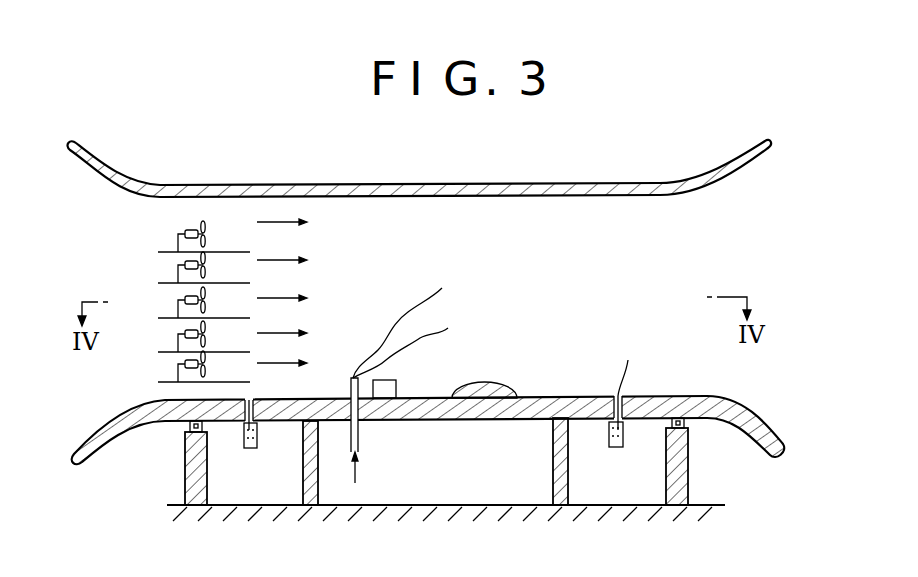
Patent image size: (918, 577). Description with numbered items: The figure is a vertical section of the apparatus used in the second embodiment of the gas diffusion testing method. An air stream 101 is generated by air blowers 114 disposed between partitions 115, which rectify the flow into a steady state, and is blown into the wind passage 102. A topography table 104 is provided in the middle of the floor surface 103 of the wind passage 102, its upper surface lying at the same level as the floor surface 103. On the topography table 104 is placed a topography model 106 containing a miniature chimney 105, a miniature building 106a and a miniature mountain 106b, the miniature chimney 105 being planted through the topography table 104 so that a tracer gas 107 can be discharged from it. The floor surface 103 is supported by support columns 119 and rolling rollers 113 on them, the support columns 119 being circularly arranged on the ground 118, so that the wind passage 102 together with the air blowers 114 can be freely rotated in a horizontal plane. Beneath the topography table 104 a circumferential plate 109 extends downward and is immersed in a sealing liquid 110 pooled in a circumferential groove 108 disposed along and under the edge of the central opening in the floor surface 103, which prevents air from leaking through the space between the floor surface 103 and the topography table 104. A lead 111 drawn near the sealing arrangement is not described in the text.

The air stream 101 is at (296, 292).
The wind passage 102 is at (410, 184).
The floor surface 103 is at (708, 396).
The topography table 104 is at (488, 419).
The miniature chimney 105 is at (360, 437).
The topography model 106 is at (487, 354).
The miniature building 106a is at (382, 388).
The miniature mountain 106b is at (505, 383).
The tracer gas 107 is at (392, 331).
The circumferential groove 108 is at (249, 449).
The circumferential plate 109 is at (258, 432).
The sealing liquid 110 is at (609, 446).
The sensor lead 111 is at (635, 381).
The rolling rollers 113 is at (190, 429).
The air blowers 114 is at (203, 222).
The partitions 115 is at (178, 318).
The ground 118 is at (525, 507).
The support columns 119 is at (185, 476).